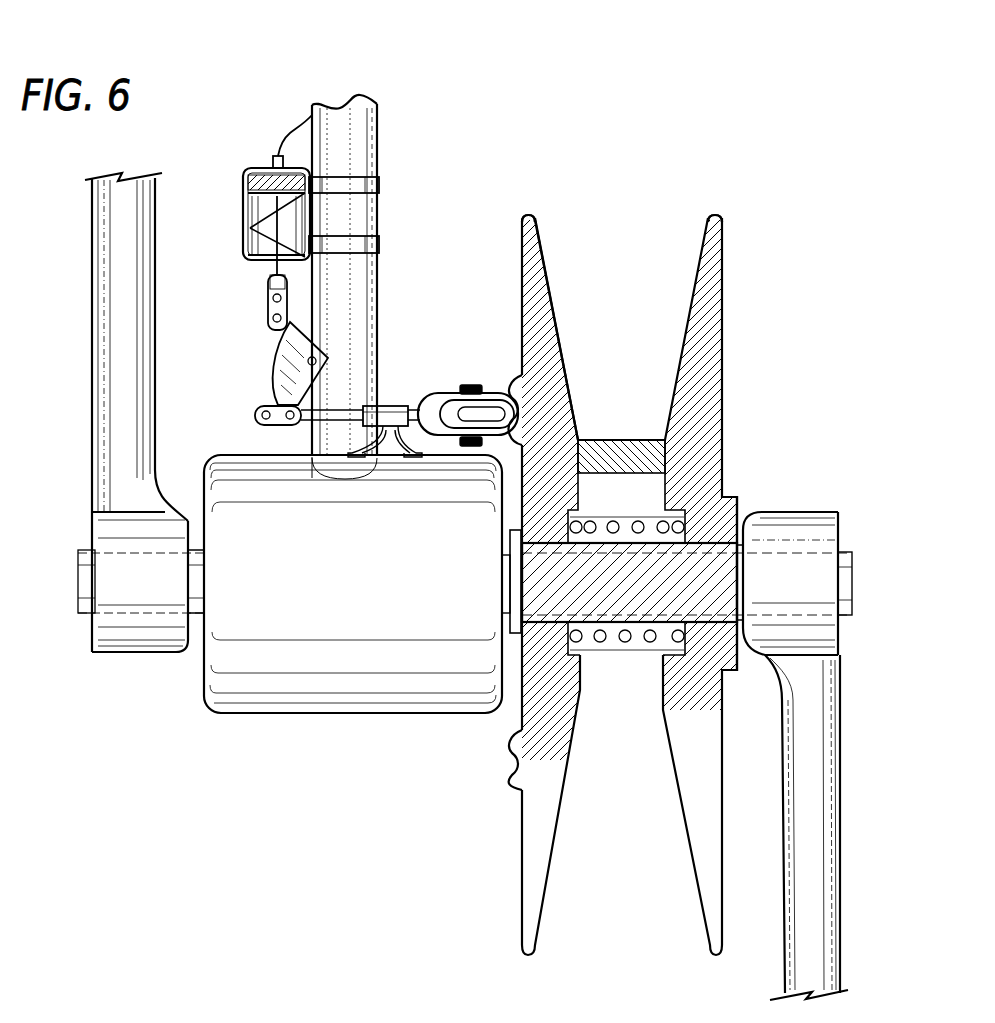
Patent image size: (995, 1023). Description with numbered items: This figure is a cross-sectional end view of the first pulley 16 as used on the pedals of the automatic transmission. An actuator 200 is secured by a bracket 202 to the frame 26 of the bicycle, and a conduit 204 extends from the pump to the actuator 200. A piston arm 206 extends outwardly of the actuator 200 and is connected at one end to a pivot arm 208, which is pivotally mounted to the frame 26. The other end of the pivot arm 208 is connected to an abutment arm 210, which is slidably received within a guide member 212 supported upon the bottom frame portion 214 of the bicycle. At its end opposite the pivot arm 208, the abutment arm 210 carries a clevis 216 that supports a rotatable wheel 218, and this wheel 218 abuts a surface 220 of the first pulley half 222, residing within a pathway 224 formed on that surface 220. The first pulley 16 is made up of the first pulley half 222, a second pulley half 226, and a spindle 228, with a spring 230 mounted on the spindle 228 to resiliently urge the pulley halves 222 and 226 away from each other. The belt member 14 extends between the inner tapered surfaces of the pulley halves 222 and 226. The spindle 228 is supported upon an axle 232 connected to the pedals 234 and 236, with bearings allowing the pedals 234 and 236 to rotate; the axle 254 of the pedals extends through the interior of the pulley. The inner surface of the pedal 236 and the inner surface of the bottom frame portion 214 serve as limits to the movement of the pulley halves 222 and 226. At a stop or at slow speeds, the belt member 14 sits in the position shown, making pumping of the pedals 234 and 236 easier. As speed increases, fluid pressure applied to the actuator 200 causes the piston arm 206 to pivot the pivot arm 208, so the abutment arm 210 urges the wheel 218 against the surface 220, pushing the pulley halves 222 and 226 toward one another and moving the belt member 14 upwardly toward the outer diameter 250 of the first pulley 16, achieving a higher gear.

The belt member 14 is at (640, 440).
The first pulley 16 is at (765, 335).
The frame 26 is at (368, 272).
The actuator 200 is at (245, 180).
The bracket 202 is at (382, 185).
The conduit 204 is at (296, 133).
The piston arm 206 is at (268, 290).
The pivot arm 208 is at (283, 375).
The abutment arm 210 is at (252, 417).
The guide member 212 is at (390, 408).
The bottom frame portion 214 is at (300, 715).
The clevis 216 is at (492, 395).
The rotatable wheel 218 is at (497, 410).
The surface 220 is at (532, 300).
The first pulley half 222 is at (548, 290).
The pathway 224 is at (520, 395).
The second pulley half 226 is at (718, 408).
The spindle 228 is at (735, 490).
The spring 230 is at (650, 650).
The axle 232 is at (790, 548).
The pedal 234 is at (112, 372).
The pedal 236 is at (828, 805).
The outer diameter 250 is at (535, 220).
The axle 254 is at (855, 560).